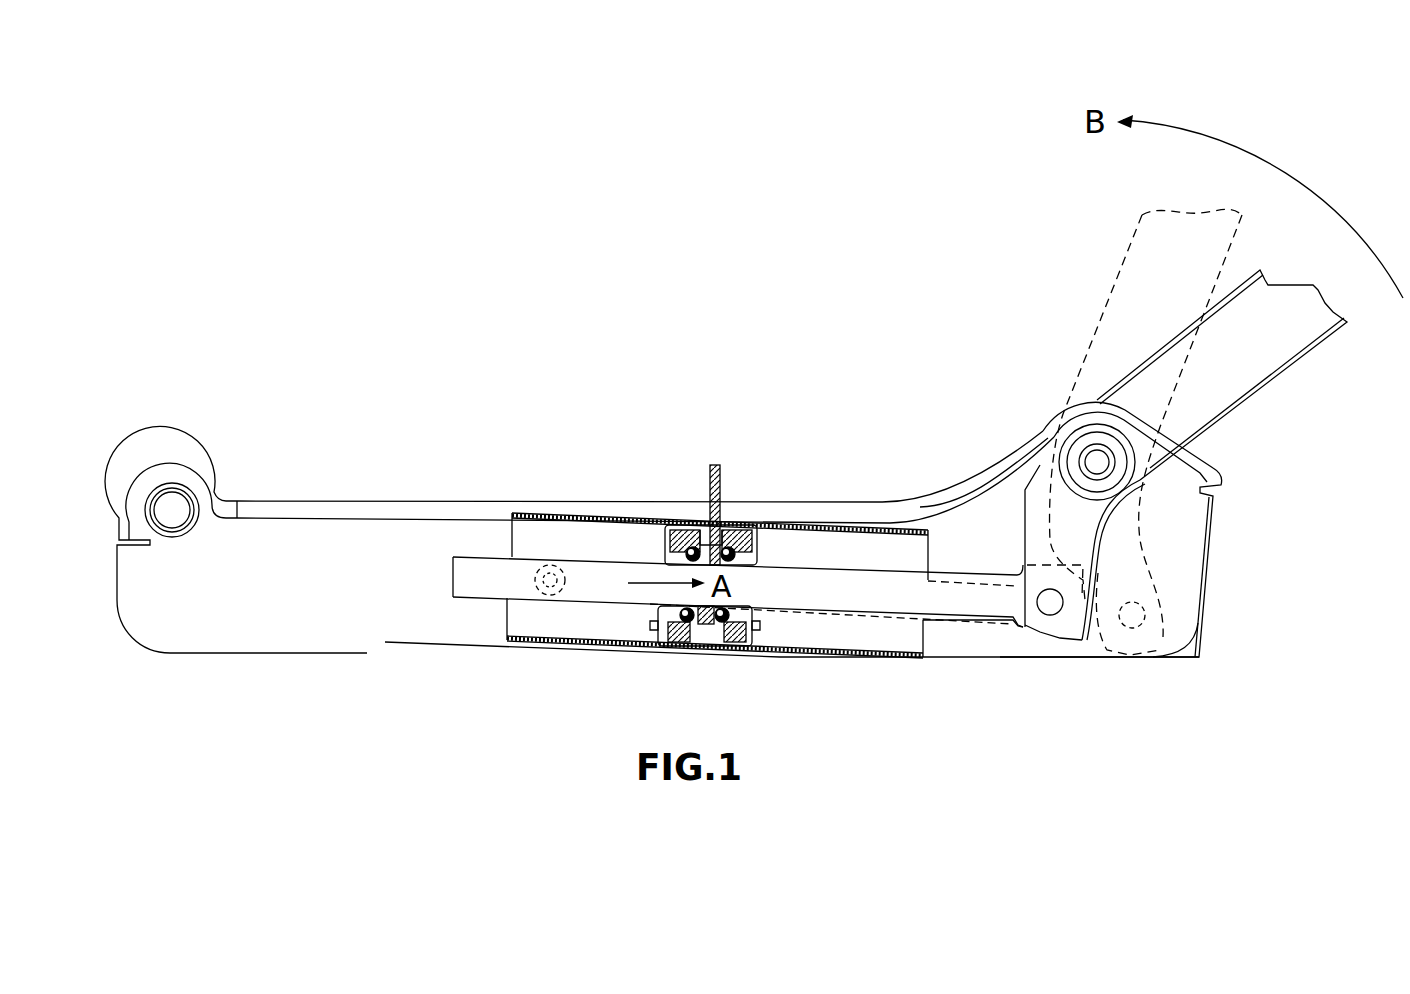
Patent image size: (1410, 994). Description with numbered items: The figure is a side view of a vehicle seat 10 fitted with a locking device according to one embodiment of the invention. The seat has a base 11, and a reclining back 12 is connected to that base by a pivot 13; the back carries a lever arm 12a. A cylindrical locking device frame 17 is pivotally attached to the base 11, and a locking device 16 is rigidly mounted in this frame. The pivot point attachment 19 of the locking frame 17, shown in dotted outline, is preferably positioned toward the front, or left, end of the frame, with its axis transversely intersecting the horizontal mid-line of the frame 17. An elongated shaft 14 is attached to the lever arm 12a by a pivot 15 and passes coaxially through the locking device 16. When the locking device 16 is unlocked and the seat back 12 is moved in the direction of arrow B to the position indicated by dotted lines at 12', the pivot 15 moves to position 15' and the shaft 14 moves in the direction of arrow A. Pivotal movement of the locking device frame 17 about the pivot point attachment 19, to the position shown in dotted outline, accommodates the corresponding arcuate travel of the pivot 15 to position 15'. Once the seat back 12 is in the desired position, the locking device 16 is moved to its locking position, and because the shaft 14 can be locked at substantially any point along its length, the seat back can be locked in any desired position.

The vehicle seat 10 is at (906, 470).
The base 11 is at (365, 633).
The reclining back 12 is at (1222, 375).
The dotted-line position of seat back 12' is at (1134, 432).
The lever arm 12a is at (1030, 538).
The pivot 13 is at (1100, 465).
The elongated shaft 14 is at (940, 608).
The pivot 15 is at (1075, 647).
The moved position of pivot 15' is at (1191, 598).
The locking device 16 is at (630, 620).
The cylindrical locking device frame 17 is at (593, 514).
The pivot point attachment 19 is at (550, 580).